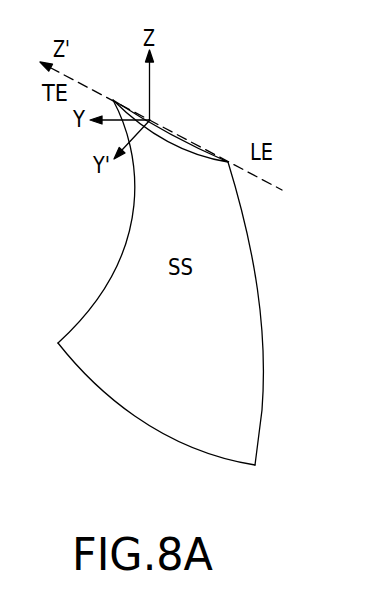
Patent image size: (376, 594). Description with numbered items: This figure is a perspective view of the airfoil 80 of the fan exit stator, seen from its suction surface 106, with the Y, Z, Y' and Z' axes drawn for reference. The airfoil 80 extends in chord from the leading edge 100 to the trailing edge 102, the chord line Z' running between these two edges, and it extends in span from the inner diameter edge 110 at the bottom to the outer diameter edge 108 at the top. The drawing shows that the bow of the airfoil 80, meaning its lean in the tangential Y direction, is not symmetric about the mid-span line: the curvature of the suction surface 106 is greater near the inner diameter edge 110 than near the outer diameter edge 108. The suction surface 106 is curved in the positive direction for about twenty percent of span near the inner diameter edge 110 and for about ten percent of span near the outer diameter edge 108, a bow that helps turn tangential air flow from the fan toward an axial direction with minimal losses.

The airfoil 80 is at (175, 267).
The leading edge 100 is at (263, 297).
The trailing edge 102 is at (128, 243).
The suction surface 106 is at (103, 333).
The outer diameter edge 108 is at (170, 134).
The inner diameter edge 110 is at (140, 420).